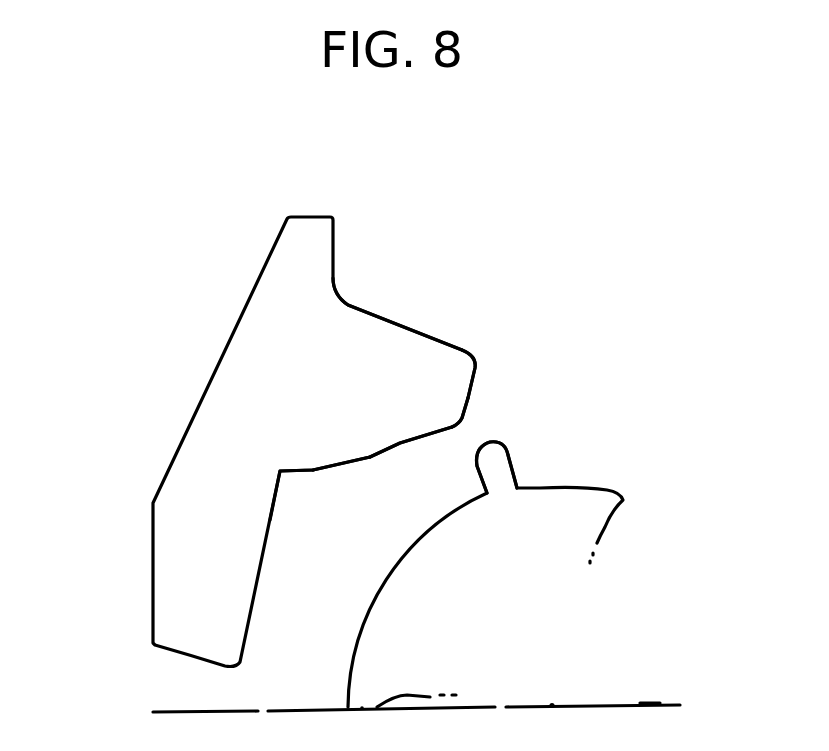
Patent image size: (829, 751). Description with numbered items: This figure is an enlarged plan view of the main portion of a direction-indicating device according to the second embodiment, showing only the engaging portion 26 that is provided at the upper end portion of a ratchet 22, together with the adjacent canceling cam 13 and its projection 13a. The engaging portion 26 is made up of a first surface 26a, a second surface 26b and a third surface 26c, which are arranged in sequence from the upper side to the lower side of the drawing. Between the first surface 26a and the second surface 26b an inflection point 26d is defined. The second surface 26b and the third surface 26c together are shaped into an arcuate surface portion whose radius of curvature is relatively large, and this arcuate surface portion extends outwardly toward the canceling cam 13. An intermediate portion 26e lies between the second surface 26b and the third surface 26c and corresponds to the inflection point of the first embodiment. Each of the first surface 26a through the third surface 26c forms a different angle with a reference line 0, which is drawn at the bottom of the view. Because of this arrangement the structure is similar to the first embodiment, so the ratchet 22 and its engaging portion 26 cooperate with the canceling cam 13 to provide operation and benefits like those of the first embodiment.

The ratchet 22 is at (157, 477).
The engaging portion 26 is at (402, 338).
The first surface 26a is at (475, 380).
The second surface 26b is at (440, 432).
The third surface 26c is at (313, 472).
The inflection point 26d is at (458, 418).
The intermediate portion 26e is at (368, 455).
The canceling cam 13 is at (607, 490).
The projection of rotary member 13a is at (510, 460).
The reference line 0 is at (650, 703).